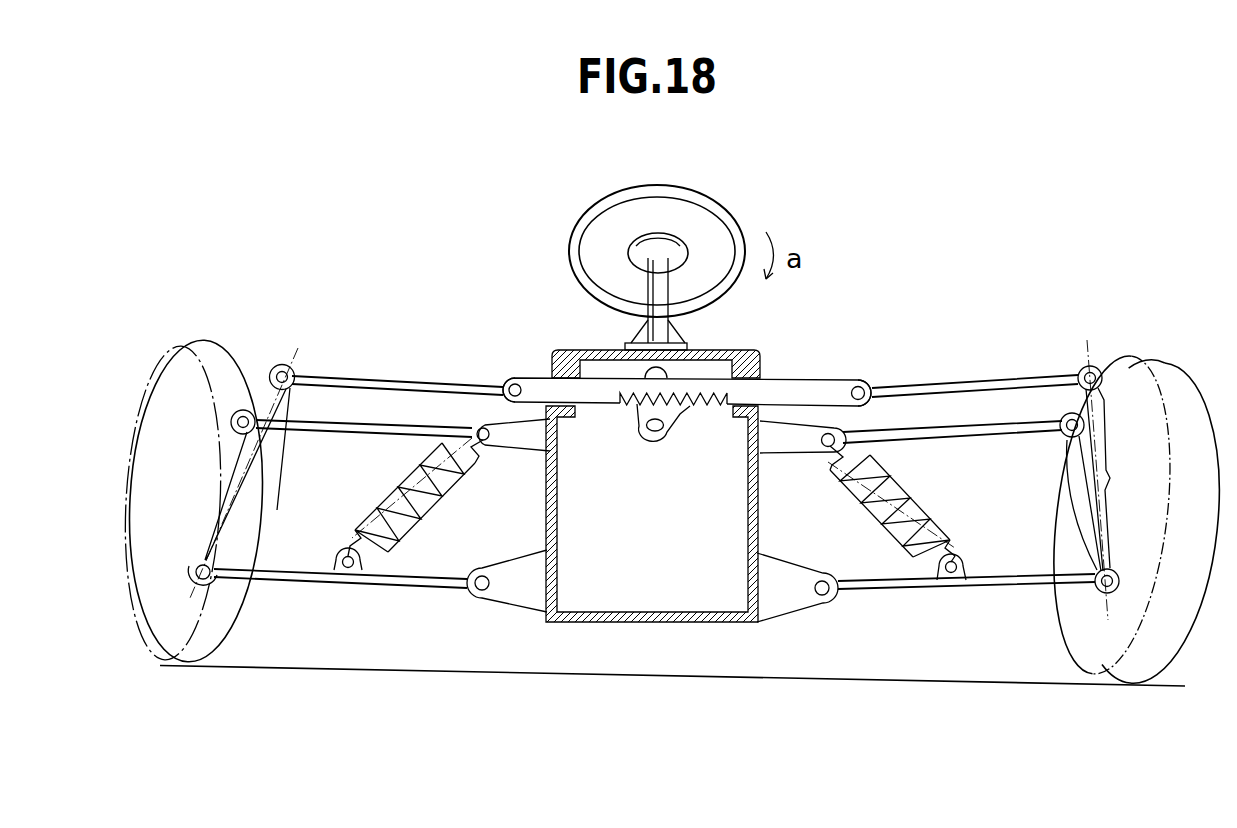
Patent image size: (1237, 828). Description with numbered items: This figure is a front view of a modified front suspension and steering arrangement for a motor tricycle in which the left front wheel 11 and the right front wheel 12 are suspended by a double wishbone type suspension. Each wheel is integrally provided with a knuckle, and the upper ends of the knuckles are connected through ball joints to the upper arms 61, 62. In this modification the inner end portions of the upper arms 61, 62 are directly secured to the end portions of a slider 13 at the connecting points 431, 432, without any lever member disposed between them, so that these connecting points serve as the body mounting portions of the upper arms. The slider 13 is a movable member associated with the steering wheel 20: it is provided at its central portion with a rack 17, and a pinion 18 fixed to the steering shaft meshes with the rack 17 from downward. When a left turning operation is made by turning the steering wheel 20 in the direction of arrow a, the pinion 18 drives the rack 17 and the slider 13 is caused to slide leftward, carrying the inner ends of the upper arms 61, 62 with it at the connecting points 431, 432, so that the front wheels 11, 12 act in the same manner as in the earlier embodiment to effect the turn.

The left front wheel 11 is at (1120, 686).
The right front wheel 12 is at (195, 666).
The slider 13 is at (801, 379).
The rack 17 is at (722, 410).
The pinion 18 is at (670, 432).
The steering wheel 20 is at (712, 208).
The connecting point of left upper arm 431 is at (865, 380).
The connecting point of right upper arm 432 is at (515, 377).
The left upper arm 61 is at (978, 385).
The right upper arm 62 is at (391, 376).